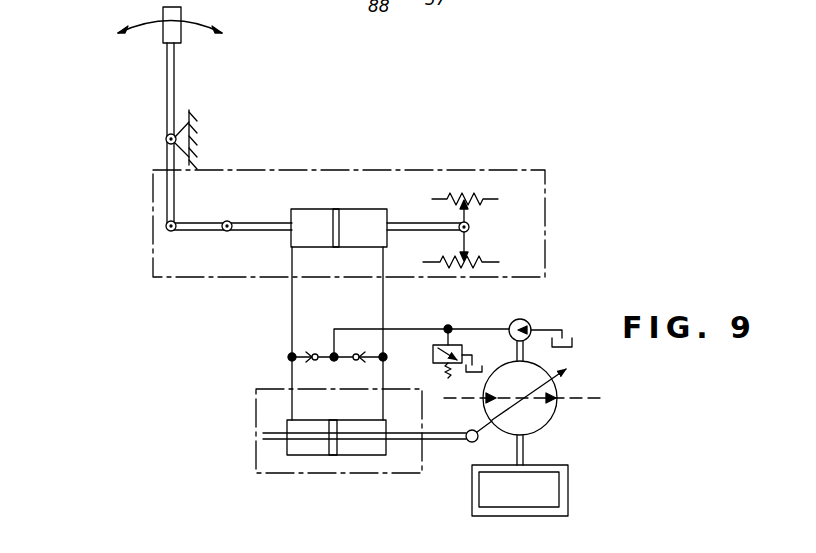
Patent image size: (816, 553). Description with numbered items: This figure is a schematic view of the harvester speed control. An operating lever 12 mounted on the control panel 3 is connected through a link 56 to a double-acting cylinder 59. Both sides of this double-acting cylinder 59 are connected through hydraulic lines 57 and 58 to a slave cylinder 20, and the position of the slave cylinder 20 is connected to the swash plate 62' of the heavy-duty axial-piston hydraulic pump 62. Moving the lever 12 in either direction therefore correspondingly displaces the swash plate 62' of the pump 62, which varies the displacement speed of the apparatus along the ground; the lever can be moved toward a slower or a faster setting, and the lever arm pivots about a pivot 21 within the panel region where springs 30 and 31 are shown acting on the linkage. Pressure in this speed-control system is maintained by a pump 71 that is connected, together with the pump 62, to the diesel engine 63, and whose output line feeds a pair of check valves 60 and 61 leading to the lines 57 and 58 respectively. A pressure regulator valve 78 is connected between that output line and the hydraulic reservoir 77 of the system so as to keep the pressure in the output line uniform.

The control panel 3 is at (509, 168).
The operating lever 12 is at (176, 86).
The slave cylinder 20 is at (347, 475).
The pivot 21 is at (471, 225).
The spring 30 is at (471, 268).
The spring 31 is at (470, 195).
The link 56 is at (222, 200).
The hydraulic line 57 is at (291, 306).
The hydraulic line 58 is at (383, 312).
The double-acting cylinder 59 is at (337, 218).
The check valve 60 is at (311, 359).
The check valve 61 is at (357, 360).
The hydraulic pump 62 is at (531, 413).
The swash plate 62' is at (561, 392).
The diesel engine 63 is at (537, 487).
The pump 71 is at (531, 326).
The hydraulic reservoir 77 is at (474, 372).
The pressure regulator valve 78 is at (433, 357).